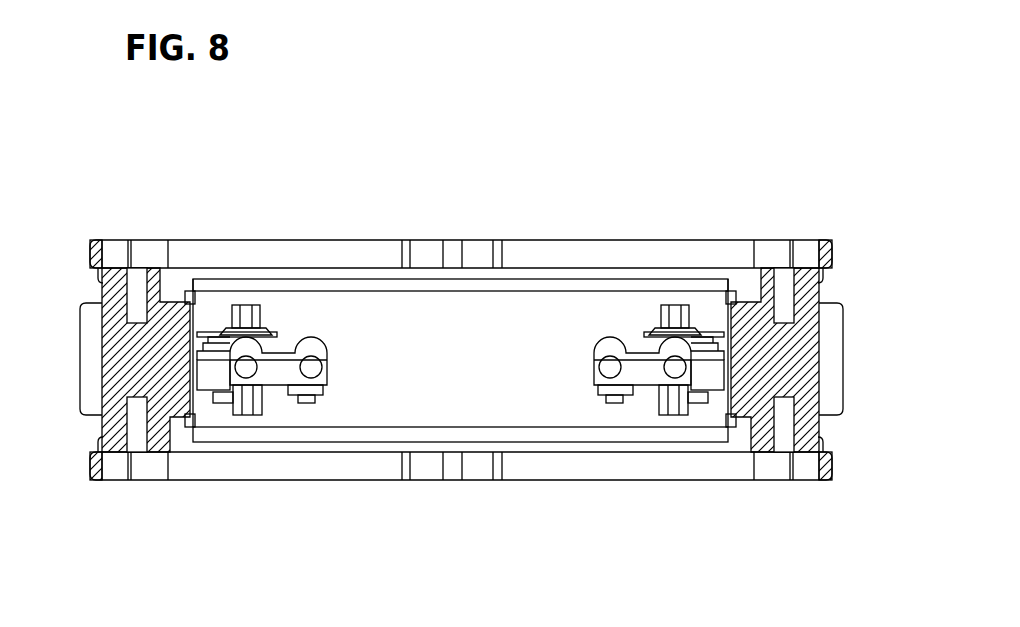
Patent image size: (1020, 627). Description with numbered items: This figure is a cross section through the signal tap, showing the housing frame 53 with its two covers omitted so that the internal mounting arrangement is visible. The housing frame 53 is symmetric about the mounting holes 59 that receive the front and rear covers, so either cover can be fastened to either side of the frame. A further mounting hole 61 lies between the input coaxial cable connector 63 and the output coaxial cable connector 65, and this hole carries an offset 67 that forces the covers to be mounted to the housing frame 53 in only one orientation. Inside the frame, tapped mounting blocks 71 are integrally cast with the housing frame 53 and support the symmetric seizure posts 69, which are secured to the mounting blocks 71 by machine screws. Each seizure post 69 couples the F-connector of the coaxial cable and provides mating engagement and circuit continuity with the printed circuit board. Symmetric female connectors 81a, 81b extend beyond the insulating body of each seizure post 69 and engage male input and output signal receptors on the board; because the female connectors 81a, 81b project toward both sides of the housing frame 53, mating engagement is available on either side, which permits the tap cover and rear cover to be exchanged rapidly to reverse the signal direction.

The housing frame 53 is at (90, 222).
The mounting holes 59 is at (142, 240).
The mounting hole 61 is at (448, 240).
The input coaxial cable connector 63 is at (78, 377).
The output coaxial cable connector 65 is at (843, 340).
The offset 67 is at (484, 240).
The seizure post 69 is at (330, 360).
The tapped mounting block 71 is at (205, 382).
The female connector 81a is at (258, 415).
The female connector 81b is at (258, 305).